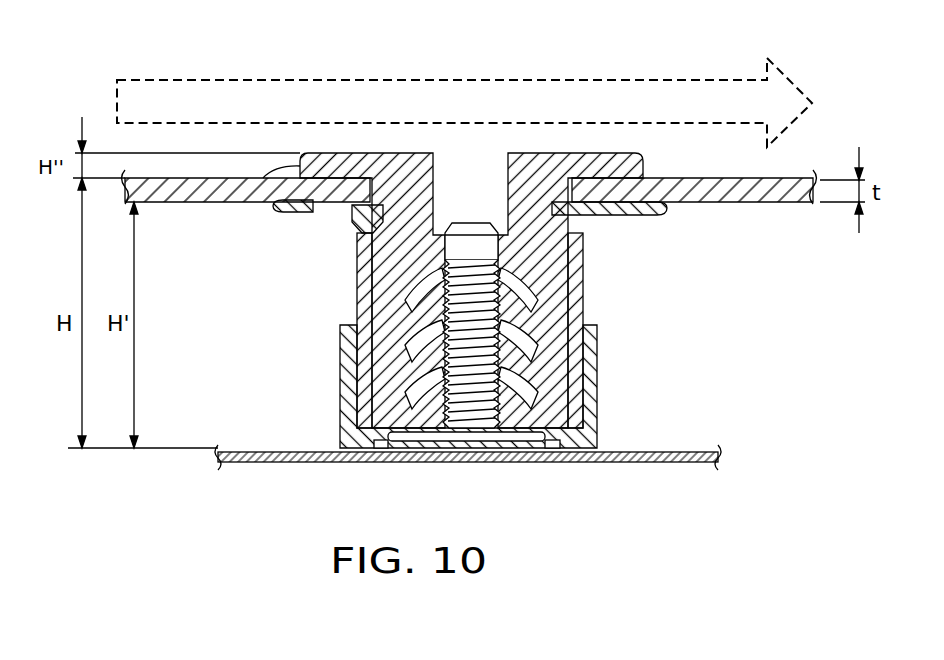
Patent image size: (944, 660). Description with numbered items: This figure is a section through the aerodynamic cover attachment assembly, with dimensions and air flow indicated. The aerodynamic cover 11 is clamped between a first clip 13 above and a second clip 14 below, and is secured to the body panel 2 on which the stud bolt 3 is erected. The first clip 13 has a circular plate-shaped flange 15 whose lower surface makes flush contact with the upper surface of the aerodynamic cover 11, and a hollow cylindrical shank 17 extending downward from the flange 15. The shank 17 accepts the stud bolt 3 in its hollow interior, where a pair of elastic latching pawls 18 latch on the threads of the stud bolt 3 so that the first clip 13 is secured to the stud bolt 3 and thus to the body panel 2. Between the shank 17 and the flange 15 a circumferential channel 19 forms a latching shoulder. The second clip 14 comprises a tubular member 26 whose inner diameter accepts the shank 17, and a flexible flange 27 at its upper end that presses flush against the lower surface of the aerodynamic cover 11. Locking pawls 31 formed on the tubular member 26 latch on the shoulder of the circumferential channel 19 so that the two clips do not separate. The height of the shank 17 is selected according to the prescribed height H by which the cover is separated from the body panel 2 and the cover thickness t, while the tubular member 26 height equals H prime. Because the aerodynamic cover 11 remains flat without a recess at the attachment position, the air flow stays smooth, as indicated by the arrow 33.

The body panel 2 is at (645, 462).
The stud bolt 3 is at (482, 413).
The aerodynamic cover 11 is at (755, 197).
The first clip 13 is at (616, 147).
The second clip 14 is at (456, 329).
The flange 15 is at (277, 172).
The shank 17 is at (357, 300).
The elastic latching pawls 18 is at (513, 312).
The circumferential channel 19 is at (582, 222).
The tubular member 26 is at (340, 363).
The flange 27 is at (293, 213).
The locking pawls 31 is at (355, 233).
The arrow 33 is at (491, 80).